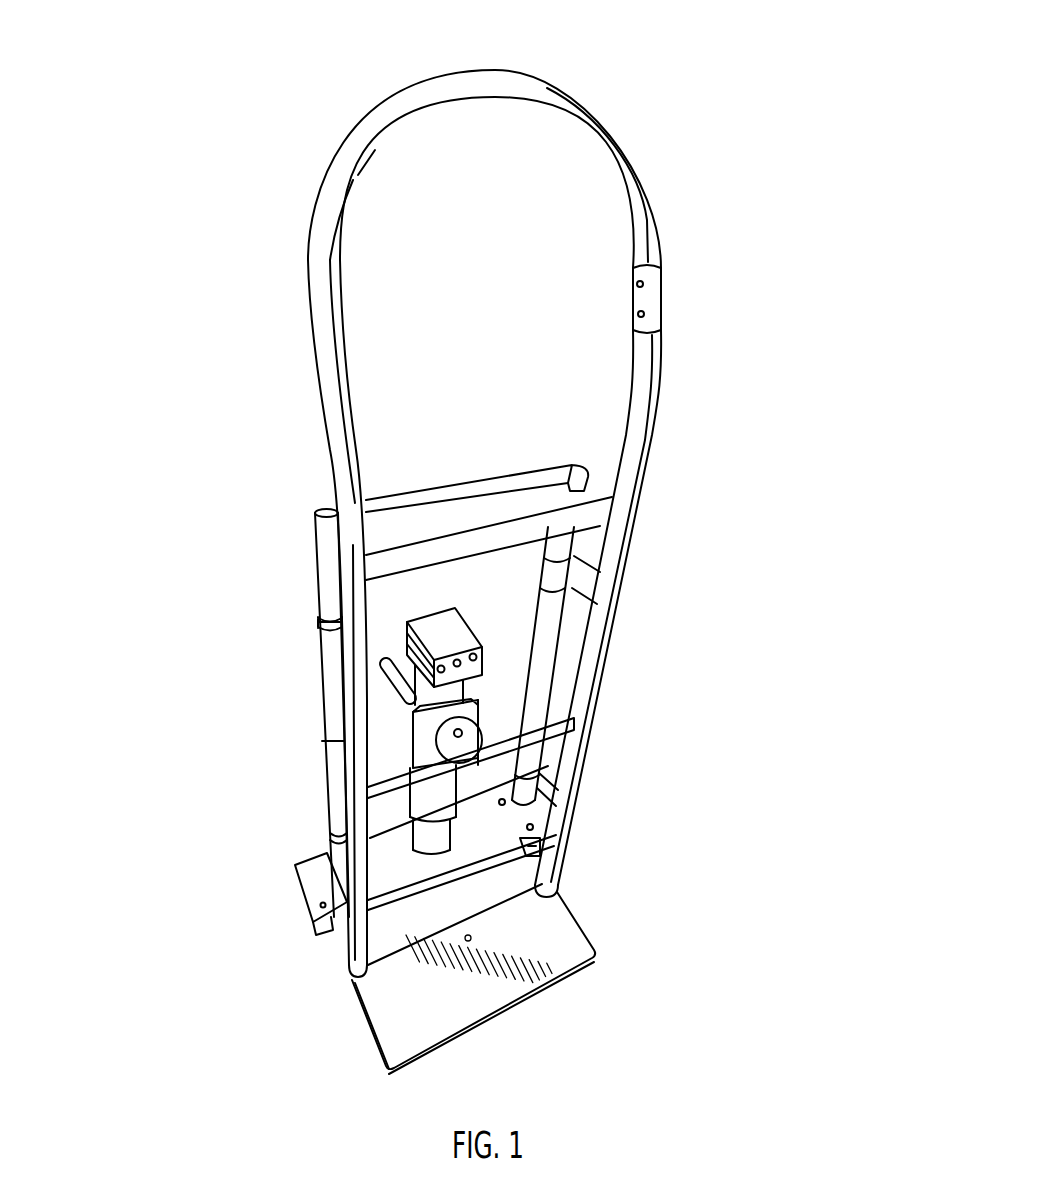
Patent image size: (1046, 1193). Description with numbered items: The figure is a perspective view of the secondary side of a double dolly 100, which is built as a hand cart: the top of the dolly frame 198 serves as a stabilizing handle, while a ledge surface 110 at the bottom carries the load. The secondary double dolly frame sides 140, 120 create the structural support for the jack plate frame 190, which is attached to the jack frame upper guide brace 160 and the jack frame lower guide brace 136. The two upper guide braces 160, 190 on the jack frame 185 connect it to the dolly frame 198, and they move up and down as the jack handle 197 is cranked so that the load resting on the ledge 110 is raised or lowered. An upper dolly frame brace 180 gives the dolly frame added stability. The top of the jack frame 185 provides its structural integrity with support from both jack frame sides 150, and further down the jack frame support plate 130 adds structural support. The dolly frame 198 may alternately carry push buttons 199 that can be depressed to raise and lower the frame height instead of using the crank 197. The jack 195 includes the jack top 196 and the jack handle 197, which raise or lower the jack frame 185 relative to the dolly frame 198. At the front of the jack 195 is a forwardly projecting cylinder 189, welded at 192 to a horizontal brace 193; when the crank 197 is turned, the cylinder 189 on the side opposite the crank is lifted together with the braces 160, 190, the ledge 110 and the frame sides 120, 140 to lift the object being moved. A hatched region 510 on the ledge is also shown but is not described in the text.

The secondary double dolly 100 is at (596, 978).
The ledge surface 110 is at (571, 927).
The secondary double dolly frame side 120 is at (578, 788).
The jack frame support plate 130 is at (418, 879).
The jack frame lower guide brace 136 is at (333, 871).
The secondary double dolly frame side 140 is at (347, 806).
The jack frame sides 150 is at (327, 741).
The jack frame upper guide brace 160 is at (322, 655).
The upper dolly frame brace 180 is at (606, 503).
The jack frame 185 is at (456, 484).
The forwardly projecting cylinder 189 is at (474, 727).
The jack plate frame 190 is at (326, 626).
The weld 192 is at (490, 746).
The horizontal brace 193 is at (399, 790).
The jack 195 is at (417, 754).
The jack top 196 is at (433, 615).
The jack handle 197 is at (386, 688).
The dolly frame 198 is at (506, 64).
The push buttons 199 is at (660, 292).
The traction surface 510 is at (478, 944).